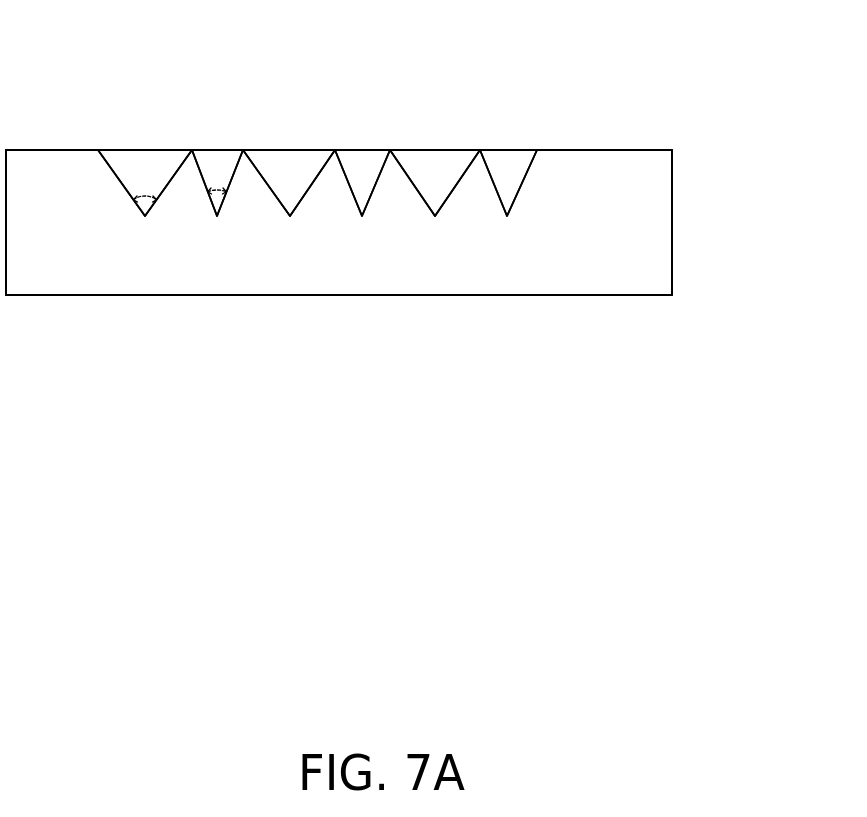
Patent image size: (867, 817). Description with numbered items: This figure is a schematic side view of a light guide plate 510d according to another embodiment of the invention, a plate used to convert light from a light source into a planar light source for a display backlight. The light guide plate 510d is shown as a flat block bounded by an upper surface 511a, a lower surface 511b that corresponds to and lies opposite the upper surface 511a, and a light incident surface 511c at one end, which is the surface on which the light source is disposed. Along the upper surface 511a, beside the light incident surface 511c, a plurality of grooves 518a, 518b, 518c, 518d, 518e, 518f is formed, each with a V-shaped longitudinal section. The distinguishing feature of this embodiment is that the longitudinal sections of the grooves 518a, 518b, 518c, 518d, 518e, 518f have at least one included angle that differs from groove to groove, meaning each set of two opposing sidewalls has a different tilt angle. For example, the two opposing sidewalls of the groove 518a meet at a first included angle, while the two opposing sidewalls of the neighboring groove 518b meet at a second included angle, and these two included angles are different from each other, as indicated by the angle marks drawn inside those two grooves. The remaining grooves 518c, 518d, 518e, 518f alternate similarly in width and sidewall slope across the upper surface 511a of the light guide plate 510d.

The light guide plate 510d is at (662, 240).
The upper surface 511a is at (649, 150).
The lower surface 511b is at (651, 297).
The light incident surface 511c is at (95, 260).
The groove 518a is at (145, 183).
The groove 518b is at (217, 157).
The groove 518c is at (290, 183).
The groove 518d is at (362, 165).
The groove 518e is at (435, 183).
The groove 518f is at (507, 183).